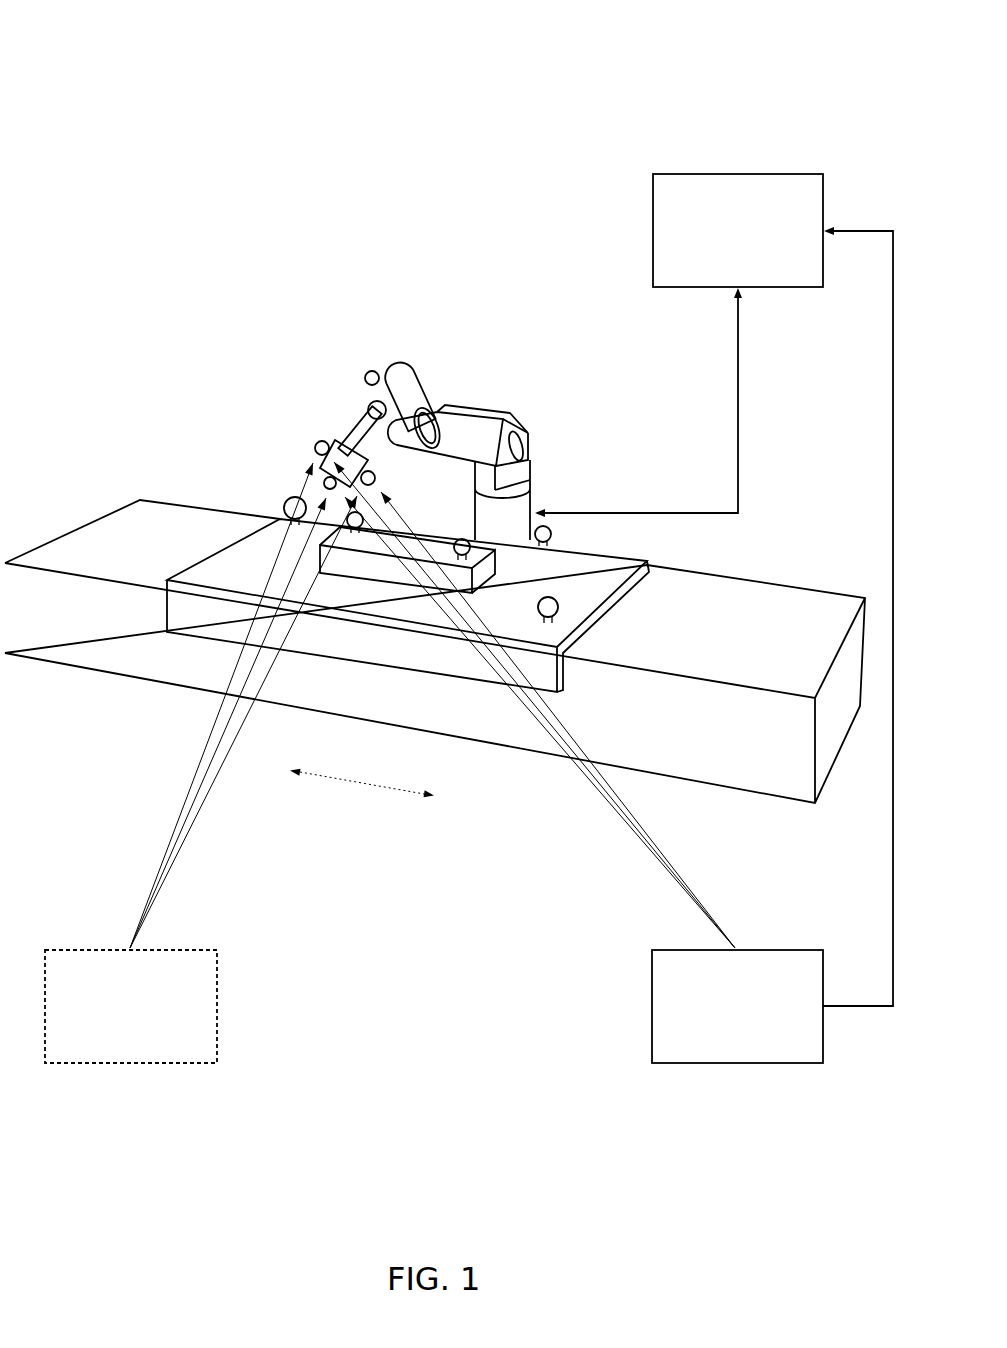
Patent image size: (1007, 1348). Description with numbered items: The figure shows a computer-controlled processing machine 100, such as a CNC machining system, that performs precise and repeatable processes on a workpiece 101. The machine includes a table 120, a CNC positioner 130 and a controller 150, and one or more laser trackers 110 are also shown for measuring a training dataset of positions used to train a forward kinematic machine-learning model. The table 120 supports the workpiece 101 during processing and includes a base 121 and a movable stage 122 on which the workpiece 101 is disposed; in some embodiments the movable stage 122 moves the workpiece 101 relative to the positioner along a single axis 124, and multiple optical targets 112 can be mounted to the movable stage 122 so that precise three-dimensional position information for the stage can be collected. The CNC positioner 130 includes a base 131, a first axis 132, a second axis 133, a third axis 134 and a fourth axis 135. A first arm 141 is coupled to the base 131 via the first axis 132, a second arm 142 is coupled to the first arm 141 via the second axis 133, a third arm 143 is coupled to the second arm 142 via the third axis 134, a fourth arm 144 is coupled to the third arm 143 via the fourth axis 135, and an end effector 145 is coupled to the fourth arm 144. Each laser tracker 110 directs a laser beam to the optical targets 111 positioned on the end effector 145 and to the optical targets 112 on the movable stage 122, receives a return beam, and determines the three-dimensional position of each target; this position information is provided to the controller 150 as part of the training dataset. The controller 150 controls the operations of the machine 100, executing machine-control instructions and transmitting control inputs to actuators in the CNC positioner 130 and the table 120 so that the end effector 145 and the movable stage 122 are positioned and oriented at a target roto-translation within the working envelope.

The computer-controlled processing machine 100 is at (145, 62).
The workpiece 101 is at (318, 553).
The laser tracker 110 is at (113, 1046).
The optical target 111 is at (366, 375).
The optical target 112 is at (288, 500).
The table 120 is at (485, 410).
The base 121 is at (785, 759).
The movable stage 122 is at (409, 656).
The single axis 124 is at (337, 785).
The CNC positioner 130 is at (228, 345).
The base 131 is at (527, 532).
The first axis 132 is at (540, 492).
The second axis 133 is at (535, 415).
The third axis 134 is at (432, 395).
The fourth axis 135 is at (388, 350).
The first arm 141 is at (532, 470).
The second arm 142 is at (492, 454).
The third arm 143 is at (444, 396).
The fourth arm 144 is at (366, 408).
The end effector 145 is at (370, 465).
The controller 150 is at (719, 256).